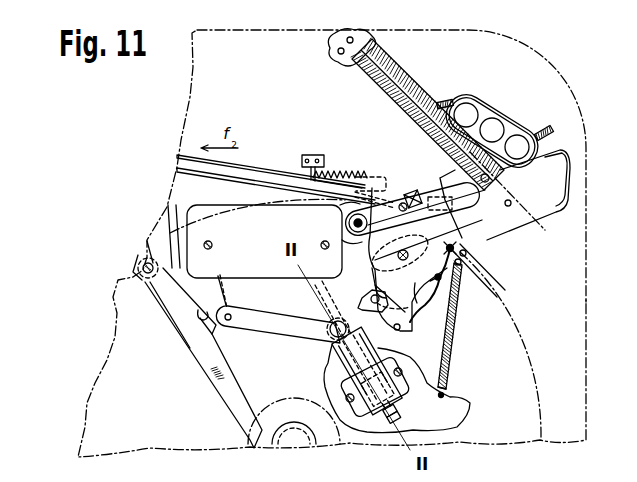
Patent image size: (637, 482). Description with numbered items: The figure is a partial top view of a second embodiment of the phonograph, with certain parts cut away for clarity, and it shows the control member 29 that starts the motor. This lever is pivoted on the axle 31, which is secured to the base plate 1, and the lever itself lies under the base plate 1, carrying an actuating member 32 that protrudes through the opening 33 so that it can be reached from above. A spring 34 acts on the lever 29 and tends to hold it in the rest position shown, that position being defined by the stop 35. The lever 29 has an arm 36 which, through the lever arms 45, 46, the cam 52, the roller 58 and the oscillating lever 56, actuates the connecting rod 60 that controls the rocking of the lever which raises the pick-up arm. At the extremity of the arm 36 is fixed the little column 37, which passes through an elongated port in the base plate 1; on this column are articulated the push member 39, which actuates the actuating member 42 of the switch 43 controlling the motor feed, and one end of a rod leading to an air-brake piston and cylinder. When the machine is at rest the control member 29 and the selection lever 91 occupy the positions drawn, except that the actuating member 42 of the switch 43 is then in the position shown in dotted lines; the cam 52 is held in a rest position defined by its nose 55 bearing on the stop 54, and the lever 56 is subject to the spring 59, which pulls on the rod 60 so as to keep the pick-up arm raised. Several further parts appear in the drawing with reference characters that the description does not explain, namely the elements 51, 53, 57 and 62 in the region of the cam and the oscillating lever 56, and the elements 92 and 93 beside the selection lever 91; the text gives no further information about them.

The base plate 1 is at (555, 277).
The control member 29 is at (505, 195).
The axle 31 is at (405, 258).
The actuating member 32 is at (555, 164).
The opening 33 is at (491, 121).
The spring 34 is at (374, 74).
The stop 35 is at (542, 136).
The arm 36 is at (409, 320).
The little column 37 is at (332, 332).
The push member 39 is at (282, 324).
The actuating member 42 is at (205, 316).
The switch 43 is at (264, 241).
The lever arm 45 is at (364, 307).
The lever arm 46 is at (421, 312).
The spring 51 is at (460, 303).
The cam 52 is at (374, 280).
The spring end 53 is at (455, 343).
The stop 54 is at (470, 262).
The nose 55 is at (455, 245).
The oscillating lever 56 is at (349, 211).
The pivot pin 57 is at (350, 226).
The roller 58 is at (403, 214).
The spring 59 is at (340, 172).
The connecting rod 60 is at (275, 168).
The pin 62 is at (428, 281).
The selection lever 91 is at (493, 118).
The key 92 is at (465, 106).
The key 93 is at (516, 135).